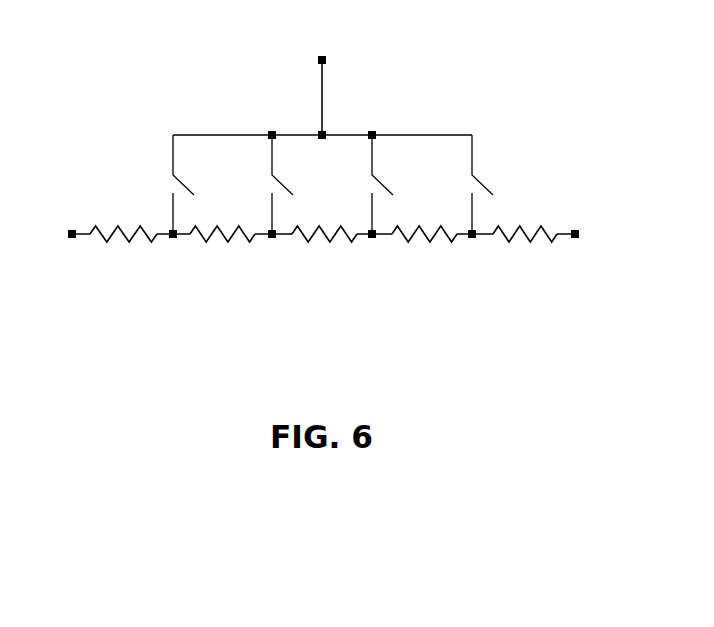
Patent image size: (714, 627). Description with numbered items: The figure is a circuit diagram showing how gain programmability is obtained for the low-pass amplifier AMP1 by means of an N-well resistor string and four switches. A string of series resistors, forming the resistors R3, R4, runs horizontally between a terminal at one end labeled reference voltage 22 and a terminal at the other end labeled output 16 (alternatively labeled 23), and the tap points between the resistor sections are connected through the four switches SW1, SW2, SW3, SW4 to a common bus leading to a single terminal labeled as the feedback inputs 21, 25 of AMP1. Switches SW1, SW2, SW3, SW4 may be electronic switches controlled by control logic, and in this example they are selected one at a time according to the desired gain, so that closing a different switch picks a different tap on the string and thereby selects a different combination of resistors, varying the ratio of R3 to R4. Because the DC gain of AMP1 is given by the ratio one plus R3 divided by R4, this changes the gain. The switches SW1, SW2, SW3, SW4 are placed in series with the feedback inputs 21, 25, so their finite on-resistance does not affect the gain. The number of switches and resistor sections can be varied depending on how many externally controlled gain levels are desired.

The feedback input 21 is at (334, 57).
The feedback input 25 is at (391, 88).
The reference voltage 22 is at (69, 224).
The terminal 23 is at (577, 221).
The output 16 is at (576, 192).
The resistor R3 is at (335, 262).
The resistor R4 is at (323, 271).
The switch SW1 is at (155, 184).
The switch SW2 is at (255, 184).
The switch SW3 is at (354, 184).
The switch SW4 is at (455, 184).